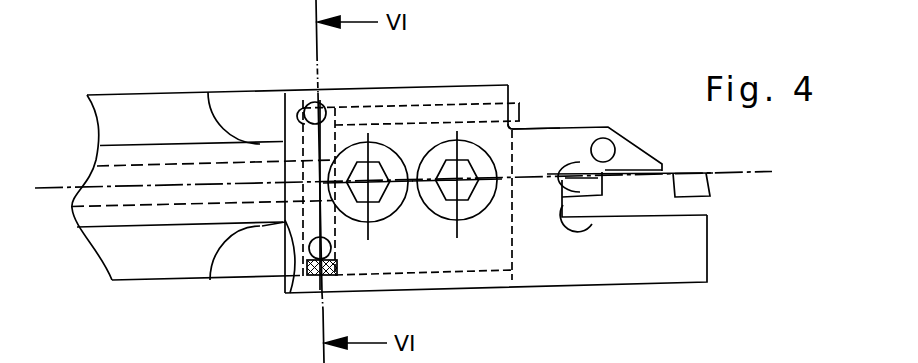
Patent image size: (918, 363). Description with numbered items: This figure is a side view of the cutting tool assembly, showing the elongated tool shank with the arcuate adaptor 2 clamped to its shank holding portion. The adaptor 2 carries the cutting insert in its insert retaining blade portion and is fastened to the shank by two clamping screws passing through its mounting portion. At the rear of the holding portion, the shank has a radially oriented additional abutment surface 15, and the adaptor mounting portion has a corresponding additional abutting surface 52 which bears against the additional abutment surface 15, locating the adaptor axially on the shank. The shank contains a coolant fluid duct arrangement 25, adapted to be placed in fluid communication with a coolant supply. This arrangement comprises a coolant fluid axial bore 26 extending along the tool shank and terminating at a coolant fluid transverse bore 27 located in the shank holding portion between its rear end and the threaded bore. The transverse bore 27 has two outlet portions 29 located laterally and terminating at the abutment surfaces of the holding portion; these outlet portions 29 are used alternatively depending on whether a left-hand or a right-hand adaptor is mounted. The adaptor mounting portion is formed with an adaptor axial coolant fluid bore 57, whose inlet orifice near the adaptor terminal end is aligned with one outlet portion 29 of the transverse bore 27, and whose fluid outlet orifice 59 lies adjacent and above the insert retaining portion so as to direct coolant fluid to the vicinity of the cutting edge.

The adaptor 2 is at (663, 268).
The additional abutment surface 15 is at (296, 276).
The coolant fluid duct arrangement 25 is at (294, 152).
The coolant fluid axial bore 26 is at (165, 173).
The coolant fluid transverse bore 27 is at (328, 147).
The outlet portions 29 is at (323, 110).
The additional abutting surface 52 is at (281, 259).
The adaptor axial coolant fluid bore 57 is at (450, 118).
The fluid outlet orifice 59 is at (510, 113).